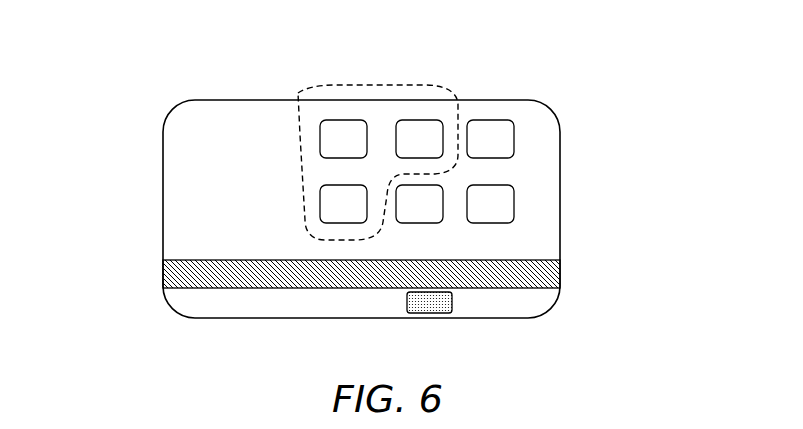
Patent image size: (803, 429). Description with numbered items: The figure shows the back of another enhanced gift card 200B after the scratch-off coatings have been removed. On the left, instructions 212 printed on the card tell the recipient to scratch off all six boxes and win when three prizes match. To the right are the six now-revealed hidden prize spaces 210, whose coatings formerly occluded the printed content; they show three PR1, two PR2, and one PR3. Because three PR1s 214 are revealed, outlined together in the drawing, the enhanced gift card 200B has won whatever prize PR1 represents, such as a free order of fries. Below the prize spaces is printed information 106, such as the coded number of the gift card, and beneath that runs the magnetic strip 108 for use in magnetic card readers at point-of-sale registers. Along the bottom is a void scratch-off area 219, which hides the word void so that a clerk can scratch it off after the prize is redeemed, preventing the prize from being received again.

The enhanced gift card 200B is at (652, 104).
The instructions 212 is at (135, 178).
The hidden prize spaces 210 is at (530, 120).
The three PR1s 214 is at (298, 92).
The information 106 is at (484, 244).
The magnetic strip 108 is at (574, 272).
The void scratch-off area 219 is at (452, 301).